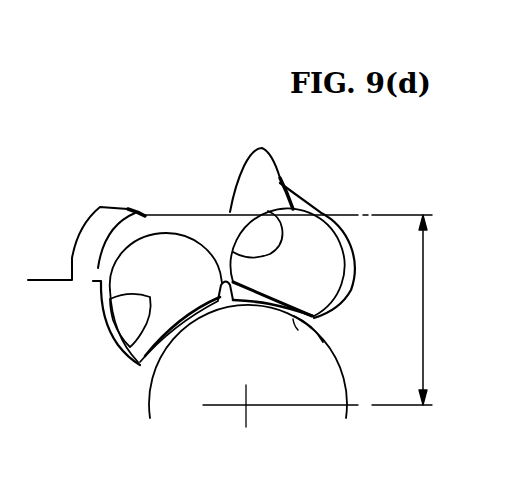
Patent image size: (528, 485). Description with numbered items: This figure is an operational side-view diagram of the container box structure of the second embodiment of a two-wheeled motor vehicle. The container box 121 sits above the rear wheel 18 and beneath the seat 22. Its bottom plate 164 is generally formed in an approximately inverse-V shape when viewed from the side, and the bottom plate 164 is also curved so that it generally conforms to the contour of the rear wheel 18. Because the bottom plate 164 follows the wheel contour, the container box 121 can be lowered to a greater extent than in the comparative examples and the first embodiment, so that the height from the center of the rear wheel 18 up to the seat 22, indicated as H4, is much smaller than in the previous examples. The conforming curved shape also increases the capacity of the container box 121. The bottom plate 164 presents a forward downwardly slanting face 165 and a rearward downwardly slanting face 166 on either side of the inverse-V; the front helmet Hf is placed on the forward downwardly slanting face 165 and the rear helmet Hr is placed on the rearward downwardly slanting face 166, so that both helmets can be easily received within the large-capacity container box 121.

The rear wheel 18 is at (149, 390).
The seat 22 is at (183, 213).
The container box 121 is at (107, 322).
The bottom plate 164 is at (323, 342).
The forward downwardly slanting face 165 is at (177, 332).
The rearward downwardly slanting face 166 is at (267, 305).
The front helmet Hf is at (148, 237).
The rear helmet Hr is at (295, 195).
The height from rear wheel center to seat H4 is at (443, 310).